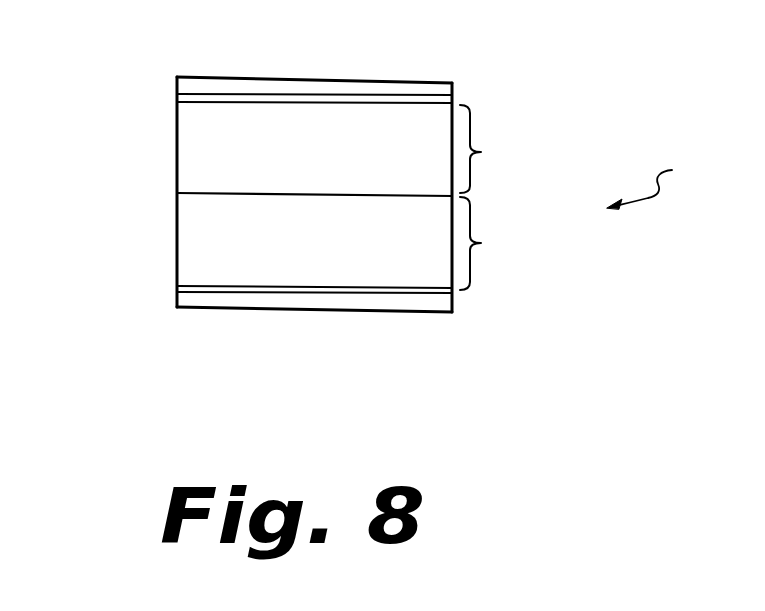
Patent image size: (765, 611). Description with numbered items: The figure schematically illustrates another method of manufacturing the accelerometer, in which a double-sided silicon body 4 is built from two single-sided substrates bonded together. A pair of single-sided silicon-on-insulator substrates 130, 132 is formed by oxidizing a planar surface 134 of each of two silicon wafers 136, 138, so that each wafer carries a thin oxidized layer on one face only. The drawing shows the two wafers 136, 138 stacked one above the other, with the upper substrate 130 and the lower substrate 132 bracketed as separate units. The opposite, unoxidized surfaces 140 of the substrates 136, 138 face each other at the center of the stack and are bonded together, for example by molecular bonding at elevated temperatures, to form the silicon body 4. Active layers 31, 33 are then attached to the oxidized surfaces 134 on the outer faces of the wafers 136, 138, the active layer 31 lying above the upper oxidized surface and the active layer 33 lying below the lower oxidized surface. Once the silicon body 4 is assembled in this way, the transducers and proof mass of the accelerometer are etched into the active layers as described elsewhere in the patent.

The active layer 31 is at (348, 84).
The oxidized planar surface 134 is at (423, 102).
The silicon wafer 136 is at (192, 139).
The opposite surface 140 is at (213, 193).
The silicon wafer 138 is at (192, 238).
The active layer 33 is at (417, 305).
The single-sided SOI substrate 130 is at (503, 149).
The single-sided SOI substrate 132 is at (502, 243).
The silicon body 4 is at (650, 183).